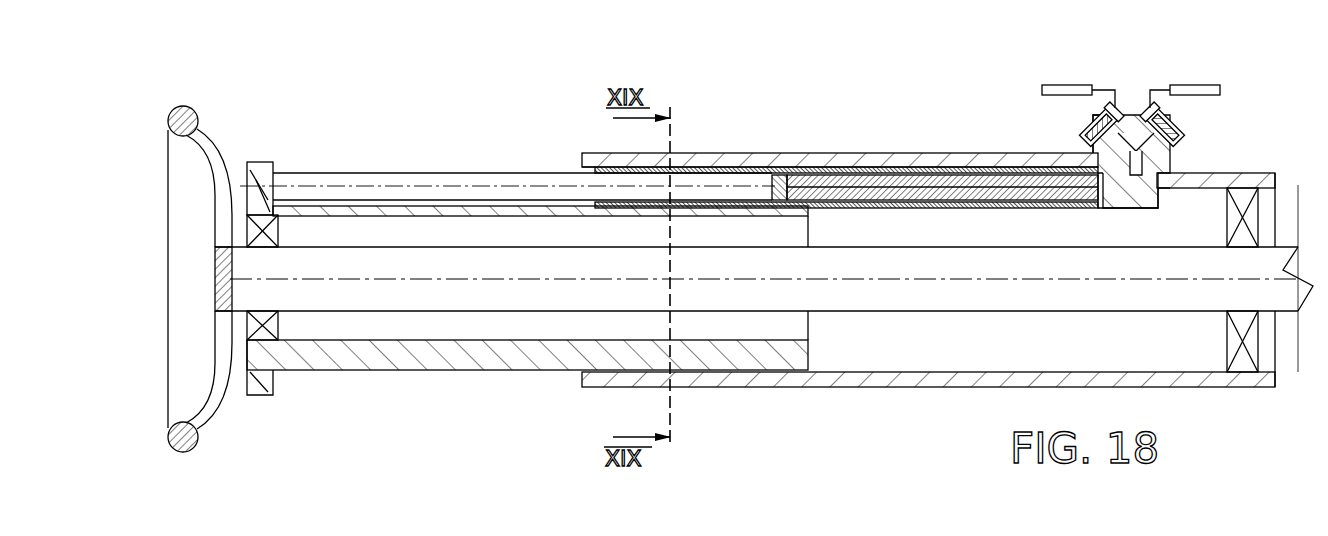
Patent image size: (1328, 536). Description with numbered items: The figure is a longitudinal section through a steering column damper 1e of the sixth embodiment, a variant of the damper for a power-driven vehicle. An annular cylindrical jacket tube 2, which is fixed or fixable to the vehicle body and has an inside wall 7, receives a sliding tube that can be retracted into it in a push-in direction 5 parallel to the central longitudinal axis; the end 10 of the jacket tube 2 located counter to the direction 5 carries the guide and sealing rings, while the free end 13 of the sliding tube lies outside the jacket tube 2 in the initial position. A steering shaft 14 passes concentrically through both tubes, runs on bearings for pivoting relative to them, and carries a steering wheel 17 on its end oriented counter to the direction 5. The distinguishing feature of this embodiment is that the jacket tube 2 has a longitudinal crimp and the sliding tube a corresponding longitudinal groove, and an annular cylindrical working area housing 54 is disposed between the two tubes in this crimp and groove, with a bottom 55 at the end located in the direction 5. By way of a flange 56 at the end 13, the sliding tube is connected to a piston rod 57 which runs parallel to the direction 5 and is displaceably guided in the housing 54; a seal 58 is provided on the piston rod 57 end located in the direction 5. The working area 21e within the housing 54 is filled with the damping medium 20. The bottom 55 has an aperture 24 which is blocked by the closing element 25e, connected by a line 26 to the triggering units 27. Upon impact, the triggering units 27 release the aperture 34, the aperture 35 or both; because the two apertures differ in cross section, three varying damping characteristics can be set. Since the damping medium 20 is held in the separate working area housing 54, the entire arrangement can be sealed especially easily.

The steering column damper 1e is at (722, 151).
The jacket tube 2 is at (847, 376).
The push-in direction 5 is at (957, 127).
The inside wall 7 is at (1040, 372).
The end of the jacket tube 10 is at (586, 156).
The free end 13 is at (265, 175).
The steering shaft 14 is at (907, 296).
The steering wheel 17 is at (183, 452).
The damping medium 20 is at (887, 193).
The working area 21e is at (970, 192).
The aperture 24 is at (1118, 204).
The closing element 25e is at (1142, 152).
The line 26 is at (1115, 89).
The triggering unit 27 is at (1054, 88).
The aperture 34 is at (1097, 150).
The aperture 35 is at (1140, 149).
The working area housing 54 is at (752, 172).
The bottom 55 is at (1106, 203).
The flange 56 is at (256, 192).
The piston rod 57 is at (418, 183).
The seal 58 is at (780, 180).